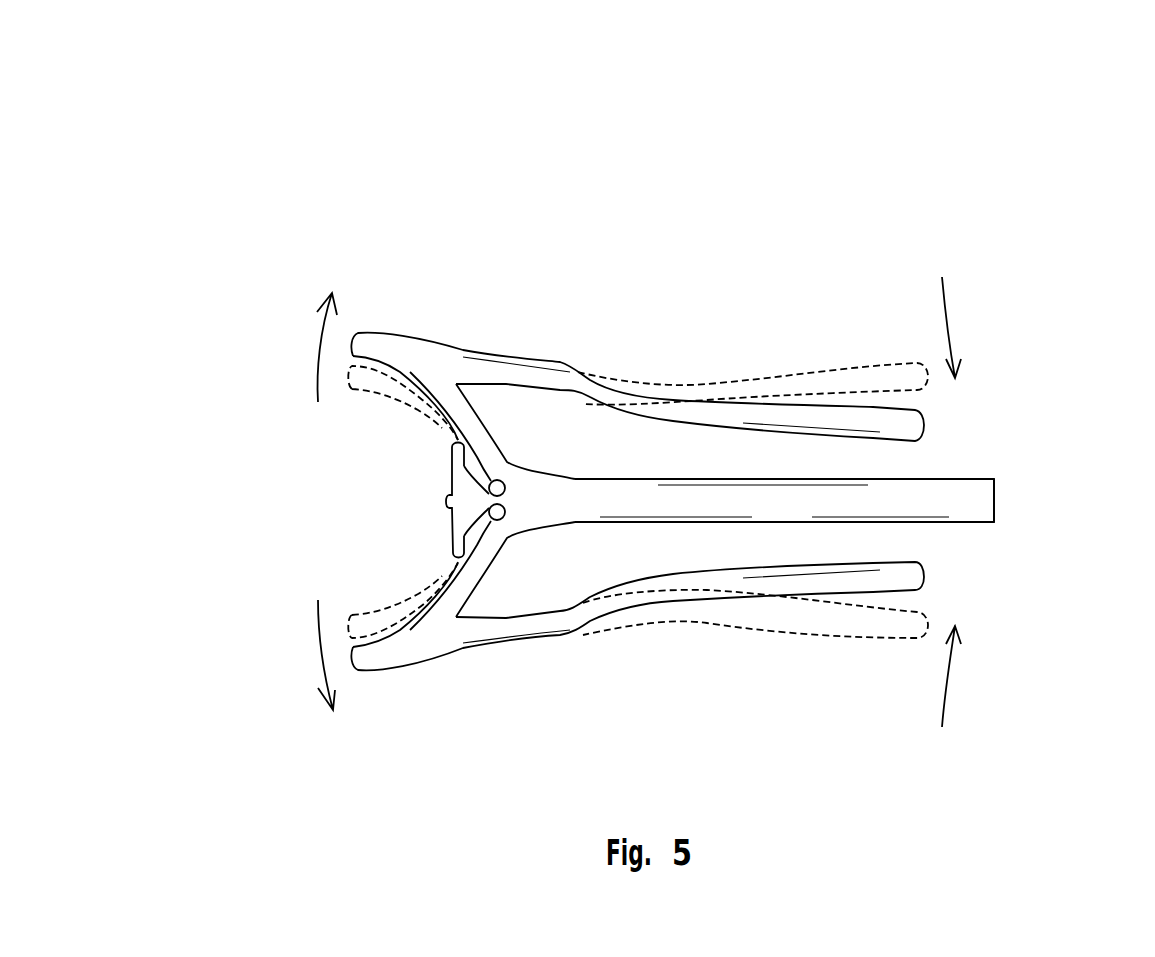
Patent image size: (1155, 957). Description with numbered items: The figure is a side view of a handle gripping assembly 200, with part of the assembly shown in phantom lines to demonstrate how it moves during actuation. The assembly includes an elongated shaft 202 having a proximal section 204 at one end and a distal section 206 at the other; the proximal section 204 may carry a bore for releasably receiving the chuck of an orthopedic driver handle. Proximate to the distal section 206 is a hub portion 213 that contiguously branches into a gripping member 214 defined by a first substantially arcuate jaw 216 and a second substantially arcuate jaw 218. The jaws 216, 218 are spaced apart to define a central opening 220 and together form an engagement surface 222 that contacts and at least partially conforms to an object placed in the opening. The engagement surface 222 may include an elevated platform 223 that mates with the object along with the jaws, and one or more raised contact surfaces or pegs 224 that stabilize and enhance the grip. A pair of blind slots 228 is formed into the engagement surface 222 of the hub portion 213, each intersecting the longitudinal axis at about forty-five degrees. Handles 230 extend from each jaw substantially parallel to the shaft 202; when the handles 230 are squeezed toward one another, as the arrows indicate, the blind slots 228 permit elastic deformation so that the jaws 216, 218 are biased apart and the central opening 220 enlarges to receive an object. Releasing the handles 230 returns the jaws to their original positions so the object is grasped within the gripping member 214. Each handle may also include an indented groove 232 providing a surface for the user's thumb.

The handle gripping assembly 200 is at (498, 180).
The elongated shaft 202 is at (975, 503).
The proximal section 204 is at (992, 448).
The distal section 206 is at (567, 471).
The hub portion 213 is at (528, 500).
The gripping member 214 is at (242, 557).
The first substantially arcuate jaw 216 is at (383, 660).
The second substantially arcuate jaw 218 is at (388, 346).
The central opening 220 is at (242, 466).
The engagement surface 222 is at (407, 380).
The elevated platform 223 is at (485, 470).
The pegs 224 is at (452, 500).
The blind slots 228 is at (472, 492).
The handles 230 is at (866, 425).
The indented groove 232 is at (561, 360).